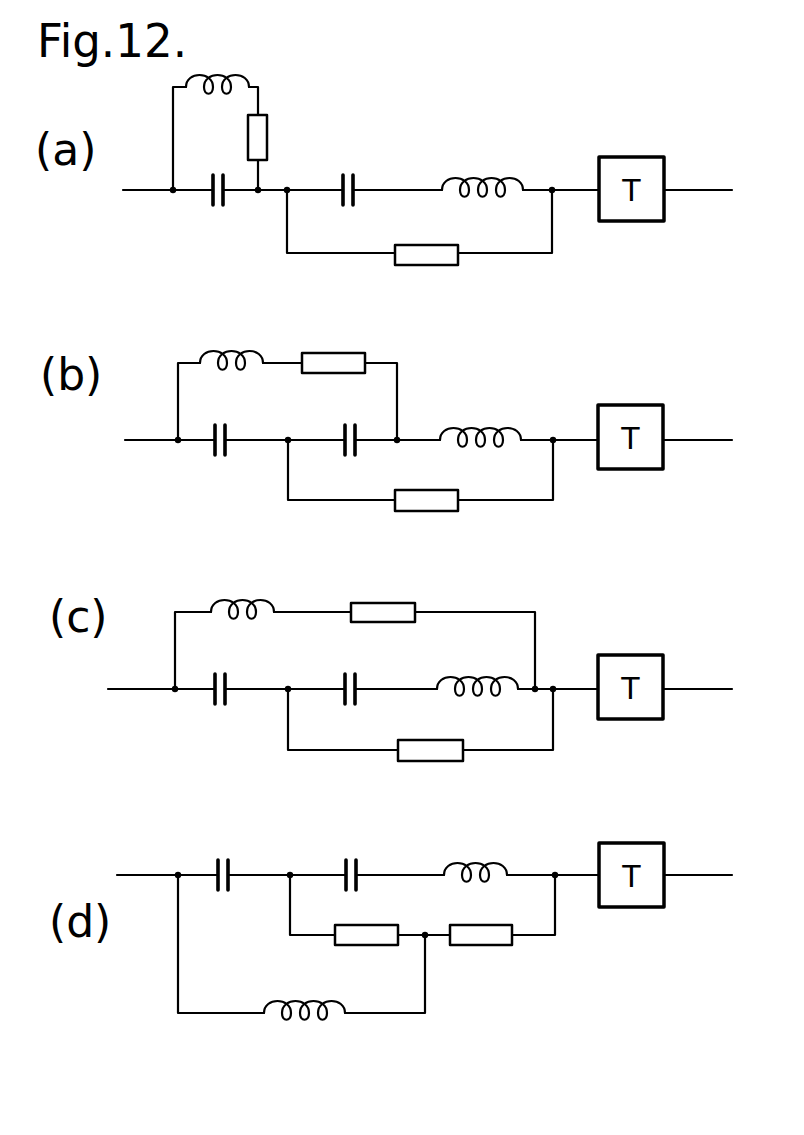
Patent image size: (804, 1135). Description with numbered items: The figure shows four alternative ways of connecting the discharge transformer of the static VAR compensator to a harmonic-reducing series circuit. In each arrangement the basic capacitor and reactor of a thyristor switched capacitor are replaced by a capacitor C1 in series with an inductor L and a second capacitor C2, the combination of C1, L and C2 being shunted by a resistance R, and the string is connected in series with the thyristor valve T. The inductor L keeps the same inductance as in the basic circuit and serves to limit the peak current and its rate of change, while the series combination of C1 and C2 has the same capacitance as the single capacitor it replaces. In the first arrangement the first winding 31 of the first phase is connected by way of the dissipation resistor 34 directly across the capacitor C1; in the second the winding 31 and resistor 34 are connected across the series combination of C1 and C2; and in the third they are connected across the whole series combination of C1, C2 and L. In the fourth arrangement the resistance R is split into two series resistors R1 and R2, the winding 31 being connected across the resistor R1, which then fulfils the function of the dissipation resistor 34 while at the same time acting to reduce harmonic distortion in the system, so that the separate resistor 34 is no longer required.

The first winding 31 is at (228, 76).
The dissipation resistor 34 is at (264, 124).
The capacitor C1 is at (211, 202).
The capacitor C2 is at (342, 183).
The inductor L is at (481, 178).
The resistance R is at (424, 265).
The series resistor R1 is at (345, 945).
The series resistor R2 is at (478, 945).
The thyristor valve T is at (631, 532).